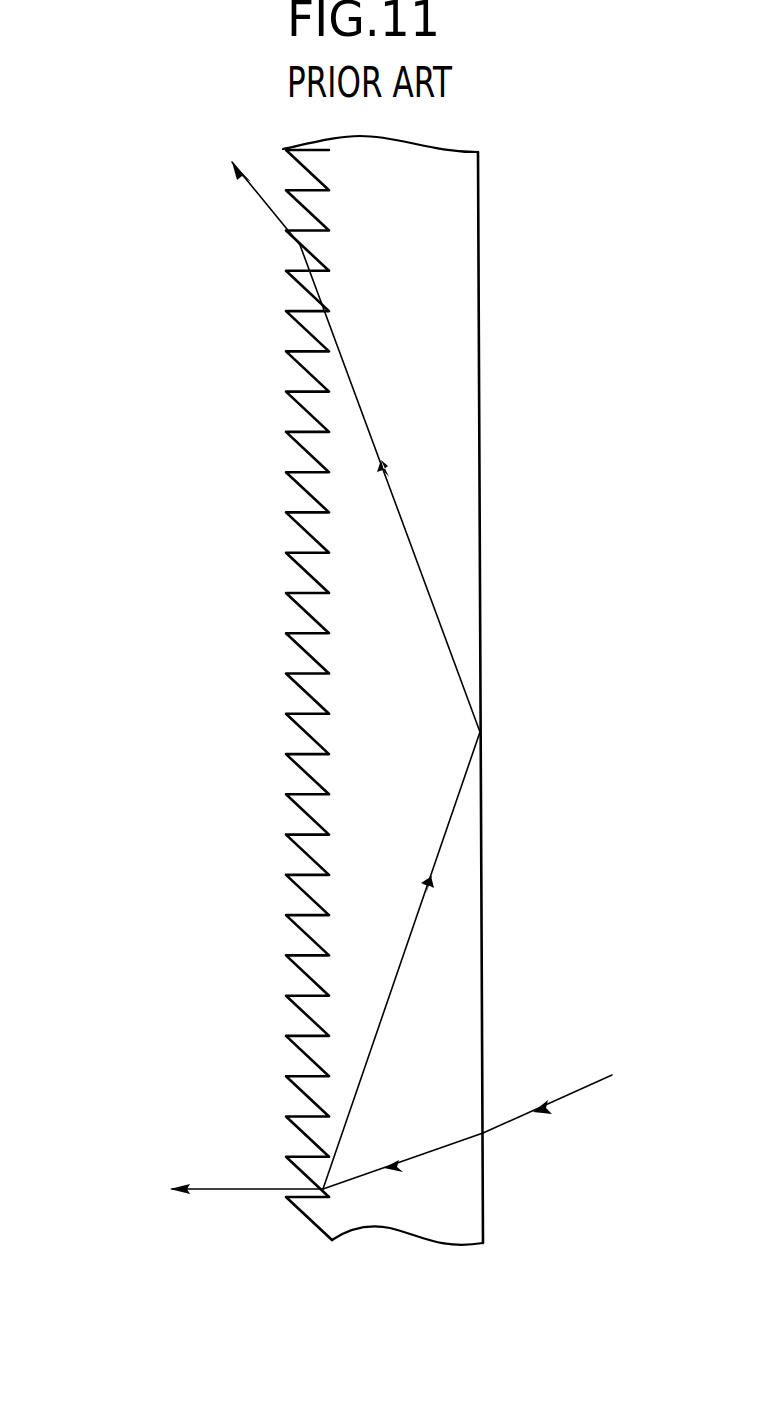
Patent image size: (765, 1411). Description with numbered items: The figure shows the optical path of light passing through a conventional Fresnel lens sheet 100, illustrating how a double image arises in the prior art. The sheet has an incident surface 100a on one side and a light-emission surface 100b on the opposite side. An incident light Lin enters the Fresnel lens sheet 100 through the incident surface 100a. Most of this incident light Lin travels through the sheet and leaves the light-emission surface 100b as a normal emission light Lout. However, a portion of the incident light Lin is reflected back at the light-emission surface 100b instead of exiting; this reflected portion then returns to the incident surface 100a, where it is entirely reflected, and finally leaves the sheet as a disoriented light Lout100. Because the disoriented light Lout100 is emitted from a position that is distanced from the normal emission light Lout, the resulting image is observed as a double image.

The Fresnel lens sheet 100 is at (378, 690).
The incident surface 100a is at (483, 1193).
The light-emission surface 100b is at (293, 1167).
The incident light Lin is at (580, 1090).
The normal emission light Lout is at (244, 1190).
The disoriented light Lout100 is at (255, 202).